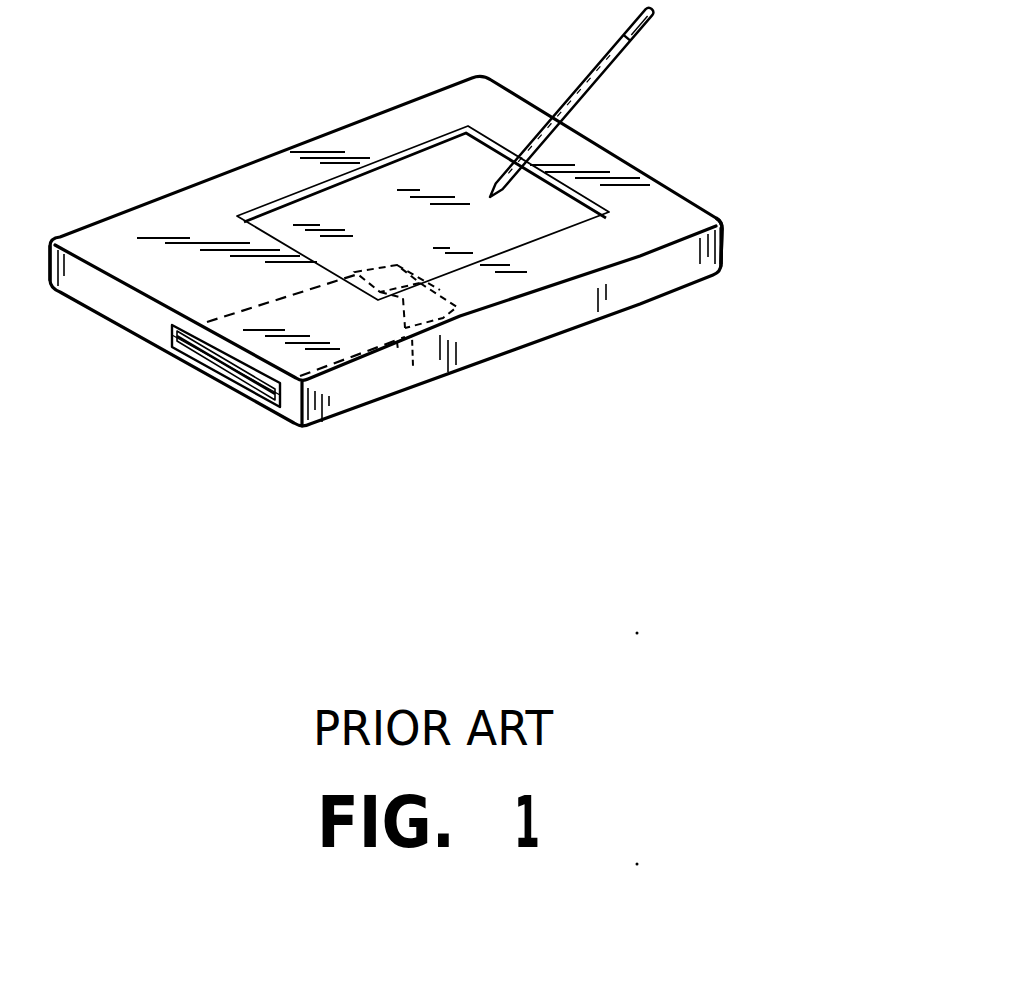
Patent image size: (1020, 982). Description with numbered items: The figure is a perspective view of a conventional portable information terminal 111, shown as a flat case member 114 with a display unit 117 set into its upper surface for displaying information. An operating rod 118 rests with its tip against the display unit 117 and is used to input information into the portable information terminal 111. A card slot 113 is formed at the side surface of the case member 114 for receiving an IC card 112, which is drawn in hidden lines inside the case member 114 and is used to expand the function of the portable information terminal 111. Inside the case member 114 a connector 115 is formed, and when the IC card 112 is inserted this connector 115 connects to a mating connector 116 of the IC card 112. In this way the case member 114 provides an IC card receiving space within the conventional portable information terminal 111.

The portable information terminal 111 is at (487, 368).
The IC card 112 is at (363, 393).
The card slot 113 is at (268, 405).
The case member 114 is at (725, 237).
The connector 115 is at (440, 295).
The mating connector 116 is at (407, 347).
The display unit 117 is at (445, 163).
The operating rod 118 is at (597, 88).